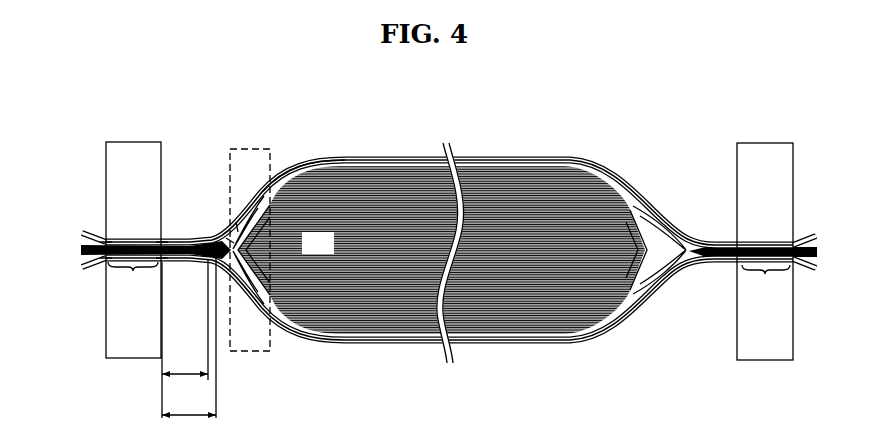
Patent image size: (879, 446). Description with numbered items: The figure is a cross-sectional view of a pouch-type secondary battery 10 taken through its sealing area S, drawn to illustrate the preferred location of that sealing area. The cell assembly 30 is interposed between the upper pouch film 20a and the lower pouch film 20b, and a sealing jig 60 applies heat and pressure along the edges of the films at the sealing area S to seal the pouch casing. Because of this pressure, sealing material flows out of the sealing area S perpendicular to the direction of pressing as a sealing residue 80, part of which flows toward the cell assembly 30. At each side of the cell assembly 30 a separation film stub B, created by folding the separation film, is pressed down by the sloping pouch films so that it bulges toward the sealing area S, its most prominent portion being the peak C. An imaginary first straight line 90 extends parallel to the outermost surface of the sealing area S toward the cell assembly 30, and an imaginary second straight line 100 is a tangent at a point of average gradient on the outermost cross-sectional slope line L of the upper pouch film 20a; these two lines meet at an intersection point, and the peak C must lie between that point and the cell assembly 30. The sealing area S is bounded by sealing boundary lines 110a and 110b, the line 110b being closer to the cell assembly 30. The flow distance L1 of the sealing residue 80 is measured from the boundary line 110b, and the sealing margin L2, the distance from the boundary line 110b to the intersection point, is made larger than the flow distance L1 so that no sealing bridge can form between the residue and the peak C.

The pouch-type secondary battery 10 is at (422, 238).
The upper pouch film 20a is at (82, 231).
The lower pouch film 20b is at (82, 265).
The cell assembly 30 is at (388, 322).
The sealing jig 60 is at (141, 142).
The sealing residue 80 is at (81, 250).
The first straight line 90 is at (442, 250).
The second straight line 100 is at (282, 172).
The sealing boundary line 110a is at (104, 239).
The sealing boundary line 110b is at (165, 239).
The separation film stub B is at (250, 149).
The peak C is at (232, 240).
The cross-sectional slope line L is at (236, 222).
The sealing area S is at (449, 281).
The flow distance L1 is at (185, 339).
The sealing margin L2 is at (189, 338).